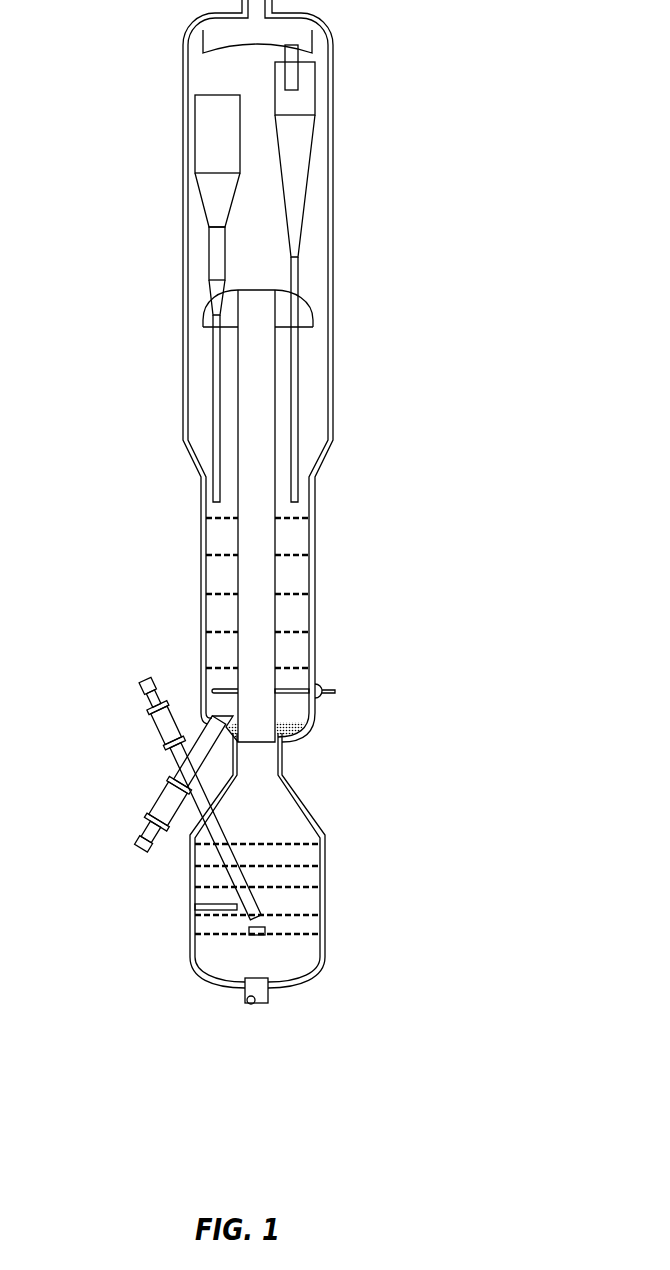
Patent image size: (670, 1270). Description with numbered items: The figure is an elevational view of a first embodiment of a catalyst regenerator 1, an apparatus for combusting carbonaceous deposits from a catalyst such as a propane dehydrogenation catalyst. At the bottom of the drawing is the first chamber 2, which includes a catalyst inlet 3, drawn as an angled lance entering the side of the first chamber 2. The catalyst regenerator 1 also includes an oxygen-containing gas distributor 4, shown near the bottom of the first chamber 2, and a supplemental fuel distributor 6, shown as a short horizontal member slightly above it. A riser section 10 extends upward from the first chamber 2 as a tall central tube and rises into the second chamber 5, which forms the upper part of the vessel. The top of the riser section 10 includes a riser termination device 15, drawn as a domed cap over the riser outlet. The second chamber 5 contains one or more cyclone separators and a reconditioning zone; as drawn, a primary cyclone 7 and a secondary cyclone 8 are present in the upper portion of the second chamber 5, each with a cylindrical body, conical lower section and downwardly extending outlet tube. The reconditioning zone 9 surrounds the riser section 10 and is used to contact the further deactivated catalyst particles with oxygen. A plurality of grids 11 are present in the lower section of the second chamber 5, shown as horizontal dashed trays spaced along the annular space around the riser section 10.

The catalyst regenerator 1 is at (430, 146).
The first chamber 2 is at (303, 802).
The catalyst inlet 3 is at (220, 842).
The oxygen-containing gas distributor 4 is at (288, 938).
The second chamber 5 is at (334, 305).
The supplemental fuel distributor 6 is at (217, 902).
The primary cyclone 7 is at (213, 127).
The secondary cyclone 8 is at (293, 133).
The reconditioning zone 9 is at (220, 540).
The riser section 10 is at (258, 570).
The grids 11 is at (221, 592).
The riser termination device 15 is at (200, 316).